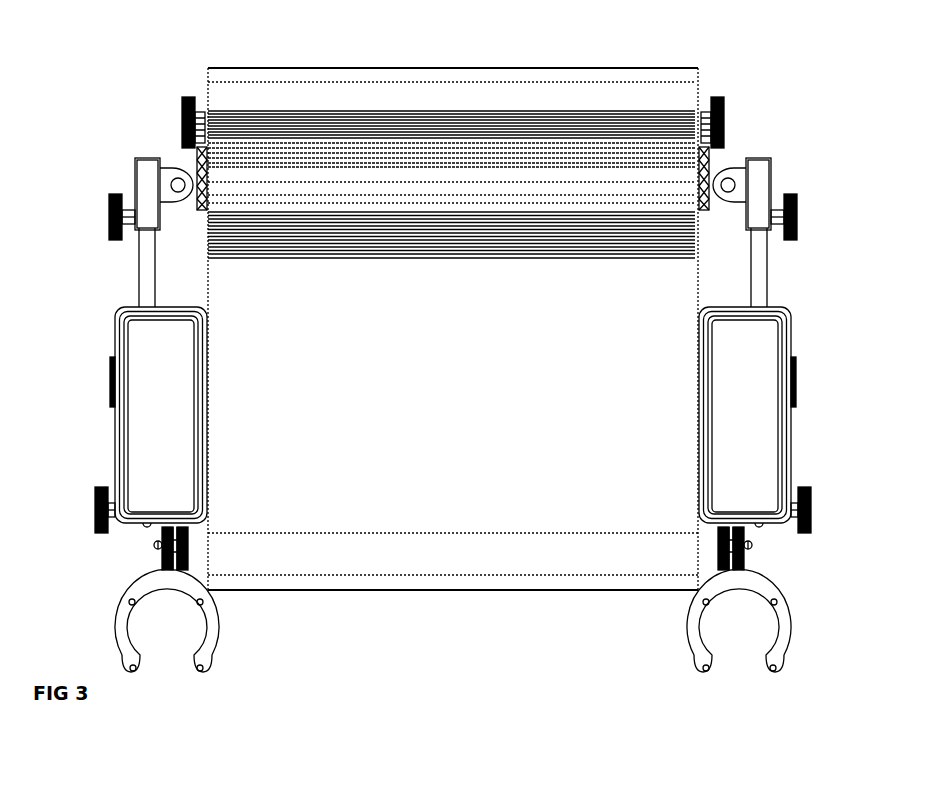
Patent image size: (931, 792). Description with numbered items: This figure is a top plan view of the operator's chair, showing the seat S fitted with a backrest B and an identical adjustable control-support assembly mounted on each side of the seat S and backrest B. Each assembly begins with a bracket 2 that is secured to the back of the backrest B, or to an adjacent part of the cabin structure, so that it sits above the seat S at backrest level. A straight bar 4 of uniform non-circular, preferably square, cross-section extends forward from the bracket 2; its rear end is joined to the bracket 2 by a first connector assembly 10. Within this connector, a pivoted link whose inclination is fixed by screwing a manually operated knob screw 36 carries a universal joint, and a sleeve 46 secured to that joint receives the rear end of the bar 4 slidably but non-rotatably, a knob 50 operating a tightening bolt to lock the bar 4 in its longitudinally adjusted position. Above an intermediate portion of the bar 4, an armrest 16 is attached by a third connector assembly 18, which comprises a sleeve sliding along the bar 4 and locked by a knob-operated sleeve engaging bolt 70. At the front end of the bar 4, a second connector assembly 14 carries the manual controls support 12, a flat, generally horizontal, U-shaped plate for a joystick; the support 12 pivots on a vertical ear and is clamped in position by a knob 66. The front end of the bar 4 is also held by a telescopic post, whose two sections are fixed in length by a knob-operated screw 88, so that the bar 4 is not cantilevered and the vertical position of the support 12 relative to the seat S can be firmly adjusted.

The bracket 2 is at (203, 100).
The knob screw 36 is at (182, 108).
The first connector assembly 10 is at (173, 125).
The sleeve 46 is at (133, 177).
The knob 50 is at (110, 197).
The straight bar 4 is at (145, 275).
The armrest 16 is at (133, 335).
The knob operated sleeve engaging bolt 70 is at (112, 365).
The third connector assembly 18 is at (110, 385).
The knob-operated screw 88 is at (95, 493).
The knob 66 is at (185, 542).
The second connector assembly 14 is at (152, 550).
The manual controls support 12 is at (215, 643).
The backrest B is at (445, 95).
The seat S is at (427, 562).